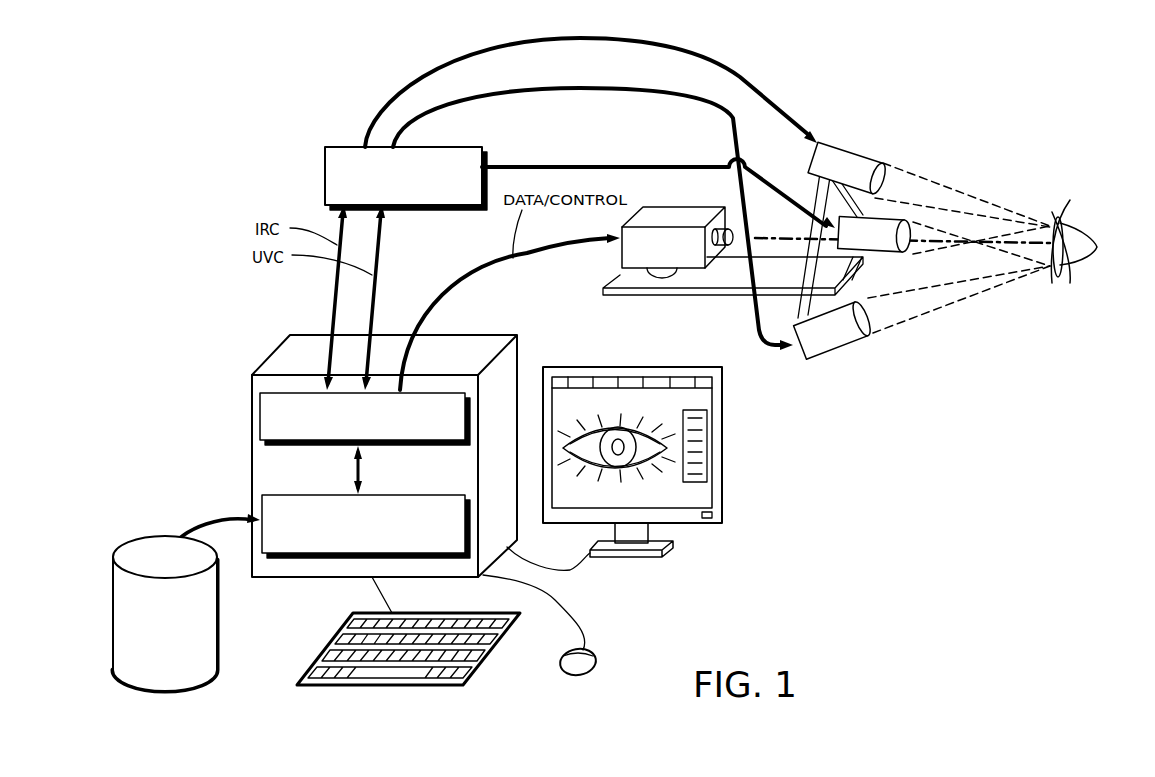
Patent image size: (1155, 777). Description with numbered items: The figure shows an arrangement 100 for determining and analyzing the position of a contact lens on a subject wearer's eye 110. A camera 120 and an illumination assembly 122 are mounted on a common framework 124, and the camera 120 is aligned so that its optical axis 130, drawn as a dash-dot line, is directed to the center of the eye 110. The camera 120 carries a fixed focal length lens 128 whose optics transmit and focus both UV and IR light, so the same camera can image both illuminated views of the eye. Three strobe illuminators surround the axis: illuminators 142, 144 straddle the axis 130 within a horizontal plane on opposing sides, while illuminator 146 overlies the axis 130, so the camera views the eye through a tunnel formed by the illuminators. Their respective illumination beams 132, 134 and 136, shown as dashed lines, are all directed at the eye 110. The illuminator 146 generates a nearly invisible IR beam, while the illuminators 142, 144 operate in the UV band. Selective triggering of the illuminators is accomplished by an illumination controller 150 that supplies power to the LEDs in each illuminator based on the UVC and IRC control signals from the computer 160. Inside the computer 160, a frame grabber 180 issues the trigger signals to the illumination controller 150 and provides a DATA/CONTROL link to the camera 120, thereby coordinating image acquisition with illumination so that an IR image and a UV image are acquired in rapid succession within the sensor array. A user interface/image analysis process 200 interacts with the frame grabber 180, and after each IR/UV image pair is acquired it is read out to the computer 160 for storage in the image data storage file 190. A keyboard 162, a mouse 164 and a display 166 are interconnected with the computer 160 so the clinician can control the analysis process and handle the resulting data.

The arrangement 100 is at (893, 74).
The eye 110 is at (1081, 213).
The camera 120 is at (686, 262).
The illumination assembly 122 is at (859, 335).
The framework 124 is at (627, 280).
The fixed focal length lens 128 is at (723, 245).
The optical axis 130 is at (790, 237).
The illumination beam 132 is at (955, 302).
The illumination beam 134 is at (990, 226).
The illumination beam 136 is at (951, 186).
The illuminator 142 is at (823, 345).
The illuminator 144 is at (892, 213).
The IR illuminator 146 is at (835, 140).
The illumination controller 150 is at (328, 162).
The computer 160 is at (280, 357).
The keyboard 162 is at (472, 665).
The mouse 164 is at (588, 650).
The display 166 is at (722, 492).
The frame grabber 180 is at (265, 425).
The image data storage file 190 is at (210, 598).
The user interface/image analysis process 200 is at (267, 498).